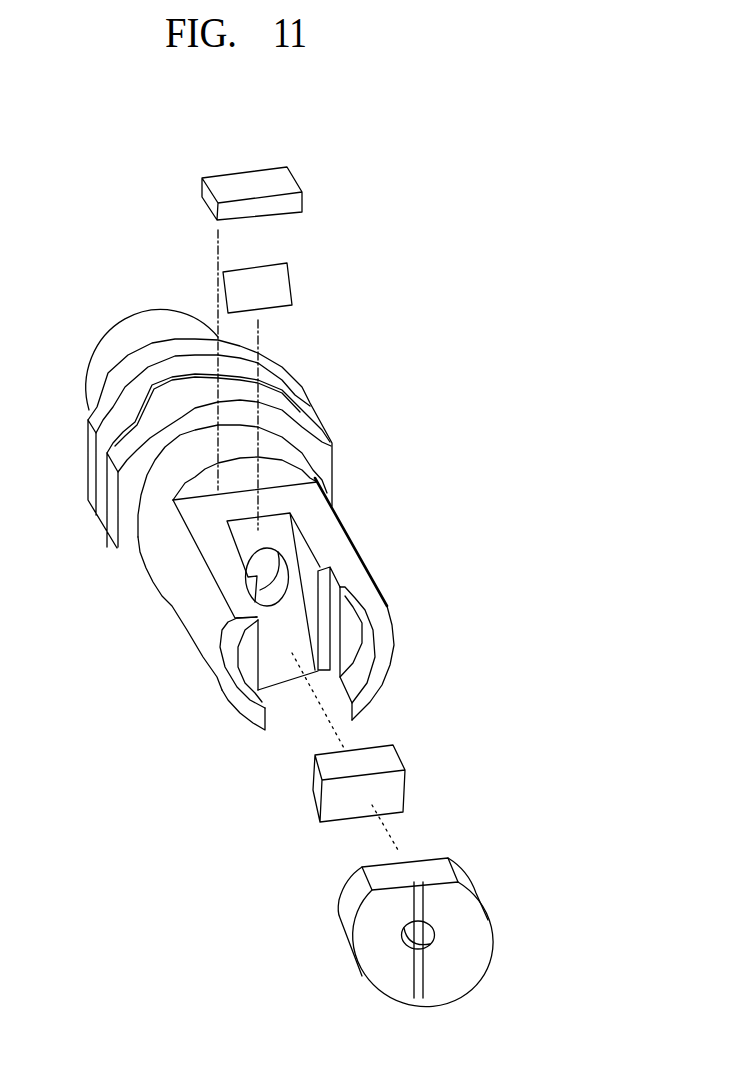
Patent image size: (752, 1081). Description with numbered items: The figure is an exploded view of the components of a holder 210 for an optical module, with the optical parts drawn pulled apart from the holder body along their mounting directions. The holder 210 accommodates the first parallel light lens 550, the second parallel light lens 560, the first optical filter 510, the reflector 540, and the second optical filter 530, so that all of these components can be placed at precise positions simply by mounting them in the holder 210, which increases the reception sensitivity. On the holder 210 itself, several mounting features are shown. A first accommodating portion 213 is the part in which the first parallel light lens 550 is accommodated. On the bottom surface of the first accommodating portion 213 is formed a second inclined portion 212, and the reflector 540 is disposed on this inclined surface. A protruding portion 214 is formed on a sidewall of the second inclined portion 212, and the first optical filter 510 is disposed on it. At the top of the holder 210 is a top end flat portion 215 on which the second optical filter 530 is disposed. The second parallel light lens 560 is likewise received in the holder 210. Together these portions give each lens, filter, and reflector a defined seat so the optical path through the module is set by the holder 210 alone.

The holder 210 is at (260, 519).
The second inclined portion 212 is at (284, 531).
The first accommodating portion 213 is at (352, 645).
The protruding portion 214 is at (325, 600).
The top end flat portion 215 is at (232, 584).
The second parallel light lens 560 is at (283, 577).
The second optical filter 530 is at (288, 174).
The reflector 540 is at (283, 283).
The first optical filter 510 is at (317, 790).
The first parallel light lens 550 is at (324, 911).